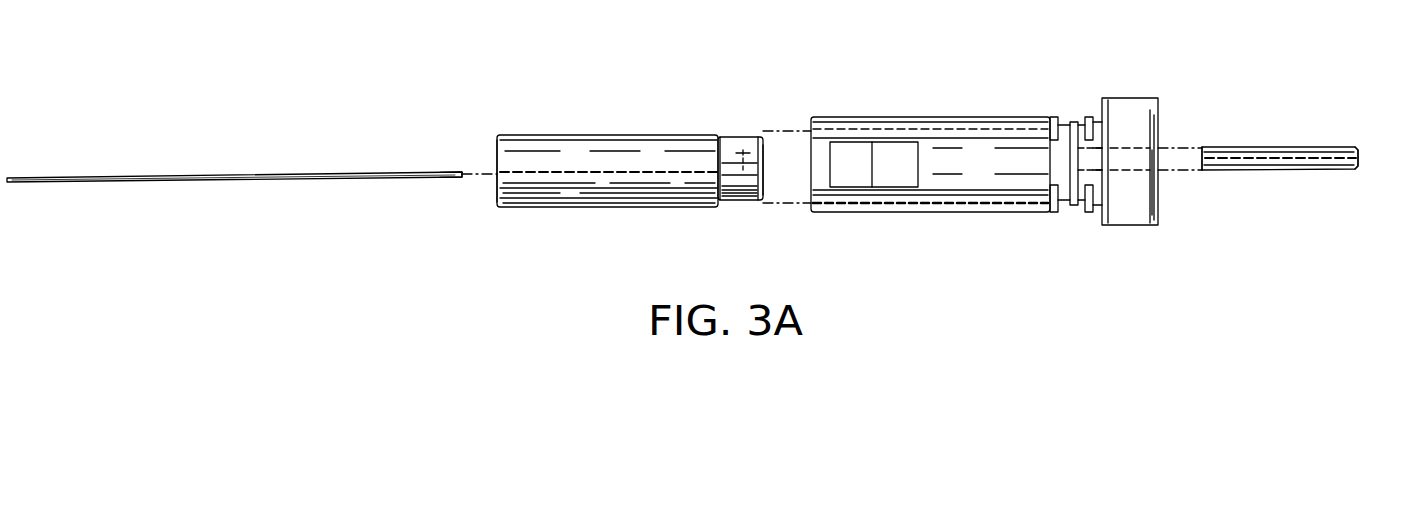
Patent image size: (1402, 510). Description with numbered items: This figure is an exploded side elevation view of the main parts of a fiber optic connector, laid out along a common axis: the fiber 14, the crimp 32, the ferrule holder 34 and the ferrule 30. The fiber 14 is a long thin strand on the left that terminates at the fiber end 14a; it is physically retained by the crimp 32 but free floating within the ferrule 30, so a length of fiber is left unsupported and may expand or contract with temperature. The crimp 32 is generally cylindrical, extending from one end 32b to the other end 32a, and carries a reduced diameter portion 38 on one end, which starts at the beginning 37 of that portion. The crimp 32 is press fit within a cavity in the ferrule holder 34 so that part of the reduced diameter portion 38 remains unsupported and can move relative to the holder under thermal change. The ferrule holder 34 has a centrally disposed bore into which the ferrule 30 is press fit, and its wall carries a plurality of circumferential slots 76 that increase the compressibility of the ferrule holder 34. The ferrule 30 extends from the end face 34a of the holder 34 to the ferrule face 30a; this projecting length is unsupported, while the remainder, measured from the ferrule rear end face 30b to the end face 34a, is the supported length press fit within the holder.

The fiber 14 is at (201, 172).
The fiber end 14a is at (463, 180).
The crimp 32 is at (600, 135).
The crimp end 32a is at (766, 182).
The crimp end 32b is at (497, 150).
The beginning of the reduced diameter portion 37 is at (718, 135).
The reduced diameter portion 38 is at (742, 200).
The ferrule holder 34 is at (905, 116).
The end face of holder 34a is at (1160, 200).
The circumferential slots 76 is at (1055, 115).
The ferrule 30 is at (1285, 170).
The ferrule face 30a is at (1358, 150).
The ferrule rear end face 30b is at (1200, 147).